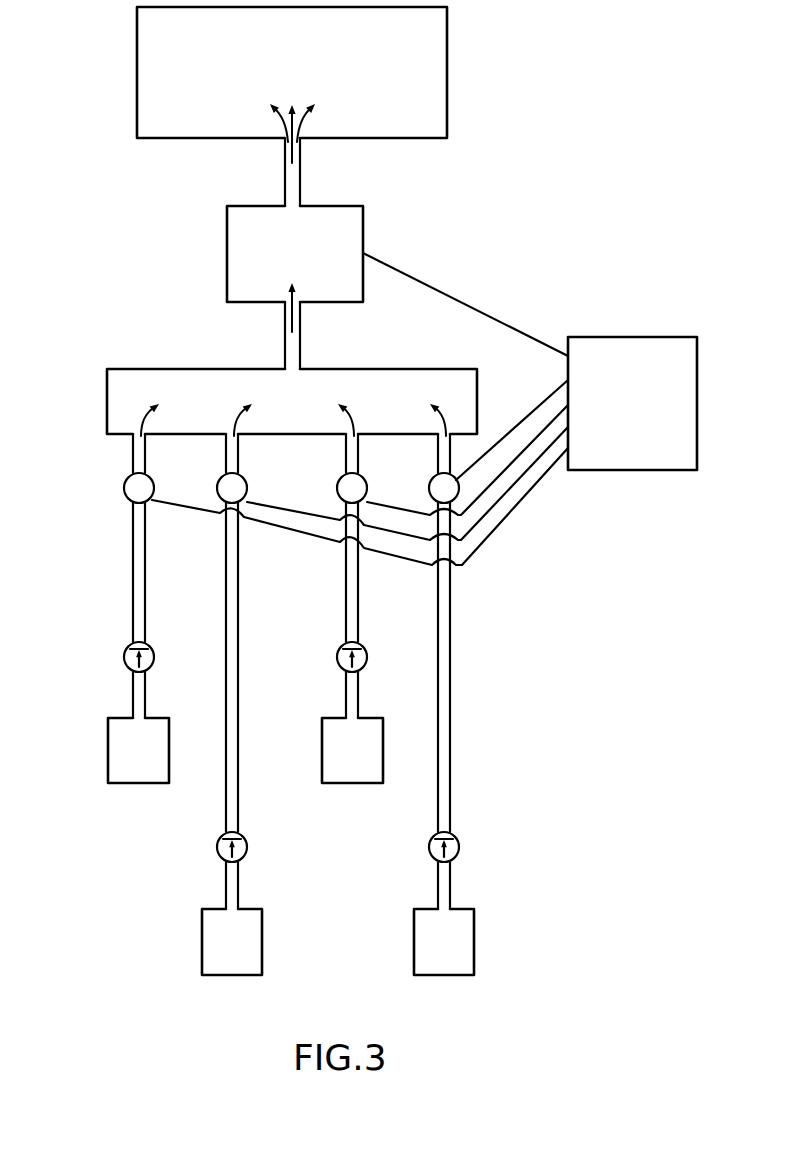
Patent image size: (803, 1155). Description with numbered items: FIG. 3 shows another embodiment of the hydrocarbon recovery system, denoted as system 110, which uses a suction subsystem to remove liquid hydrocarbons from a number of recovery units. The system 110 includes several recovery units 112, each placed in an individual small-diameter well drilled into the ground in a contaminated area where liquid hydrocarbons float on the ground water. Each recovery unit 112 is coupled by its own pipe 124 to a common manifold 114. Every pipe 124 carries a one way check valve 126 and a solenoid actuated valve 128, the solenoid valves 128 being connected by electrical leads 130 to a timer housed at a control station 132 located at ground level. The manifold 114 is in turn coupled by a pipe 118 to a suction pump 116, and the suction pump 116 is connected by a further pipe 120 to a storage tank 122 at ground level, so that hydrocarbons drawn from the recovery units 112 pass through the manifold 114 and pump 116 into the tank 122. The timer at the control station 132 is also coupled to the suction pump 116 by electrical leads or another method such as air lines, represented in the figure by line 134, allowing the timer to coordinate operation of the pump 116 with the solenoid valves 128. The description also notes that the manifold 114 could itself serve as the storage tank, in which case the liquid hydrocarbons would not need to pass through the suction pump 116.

The system 110 is at (446, 211).
The recovery unit 112 is at (169, 752).
The manifold 114 is at (107, 408).
The suction pump 116 is at (227, 246).
The pipe 118 is at (285, 334).
The pipe 120 is at (300, 176).
The storage tank 122 is at (447, 69).
The pipe 124 is at (226, 588).
The one way check valve 126 is at (154, 655).
The solenoid actuated valve 128 is at (225, 474).
The electrical leads 130 is at (512, 507).
The control station 132 is at (653, 337).
The line 134 is at (500, 321).